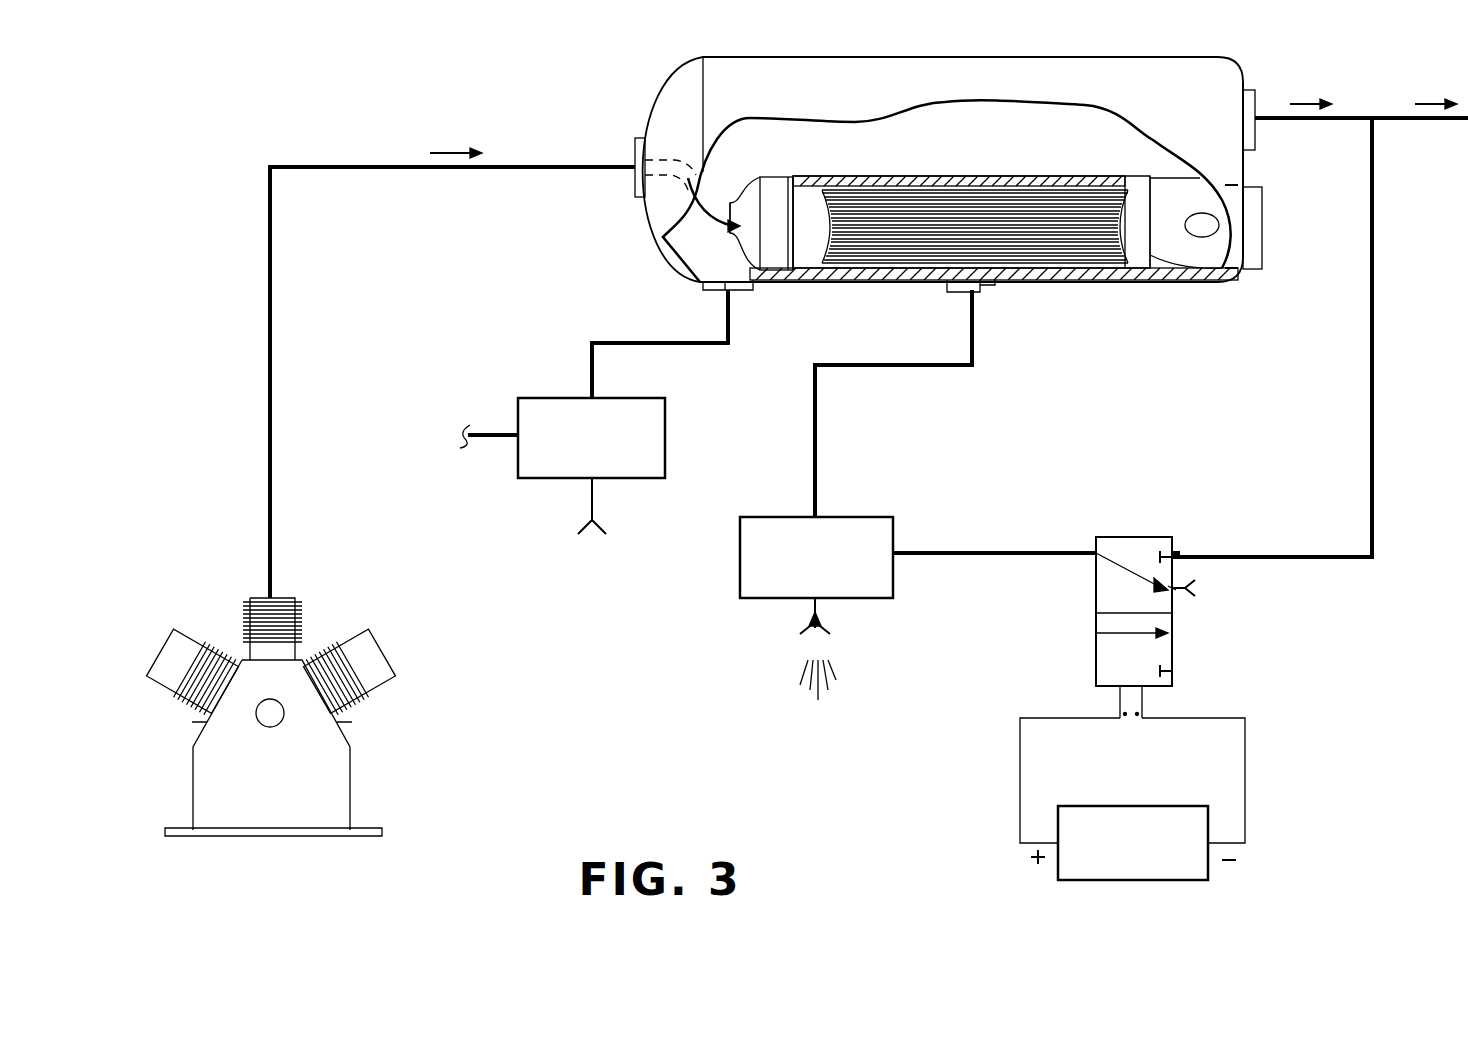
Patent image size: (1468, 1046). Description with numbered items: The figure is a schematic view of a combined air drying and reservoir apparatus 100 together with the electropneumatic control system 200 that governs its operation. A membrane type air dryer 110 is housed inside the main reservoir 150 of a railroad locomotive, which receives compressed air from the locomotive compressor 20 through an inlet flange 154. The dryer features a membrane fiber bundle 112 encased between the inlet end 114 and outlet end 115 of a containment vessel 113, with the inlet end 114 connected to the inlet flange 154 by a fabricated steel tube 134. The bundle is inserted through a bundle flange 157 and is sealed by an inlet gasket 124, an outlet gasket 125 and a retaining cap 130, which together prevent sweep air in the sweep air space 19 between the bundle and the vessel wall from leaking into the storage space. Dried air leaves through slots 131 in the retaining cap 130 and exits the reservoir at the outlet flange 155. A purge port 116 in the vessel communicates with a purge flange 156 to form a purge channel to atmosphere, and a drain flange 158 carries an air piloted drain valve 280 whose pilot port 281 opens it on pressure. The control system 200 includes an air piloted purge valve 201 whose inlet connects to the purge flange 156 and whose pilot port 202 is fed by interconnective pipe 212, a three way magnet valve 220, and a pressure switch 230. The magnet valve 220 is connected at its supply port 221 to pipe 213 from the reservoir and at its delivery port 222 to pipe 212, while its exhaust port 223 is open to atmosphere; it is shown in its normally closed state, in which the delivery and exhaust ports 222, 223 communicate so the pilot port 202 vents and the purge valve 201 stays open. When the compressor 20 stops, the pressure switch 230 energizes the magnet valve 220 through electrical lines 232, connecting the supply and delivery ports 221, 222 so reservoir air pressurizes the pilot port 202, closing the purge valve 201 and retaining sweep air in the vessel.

The locomotive compressor 20 is at (290, 789).
The combined air drying and reservoir apparatus 100 is at (593, 115).
The membrane type air dryer 110 is at (1087, 200).
The membrane fiber bundle 112 is at (1010, 200).
The containment vessel 113 is at (802, 177).
The inlet end 114 is at (732, 240).
The outlet end 115 is at (1158, 255).
The purge port 116 is at (955, 280).
The inlet gasket 124 is at (790, 276).
The outlet gasket 125 is at (1150, 190).
The retaining cap 130 is at (1200, 265).
The slots 131 is at (1200, 188).
The fabricated steel tube 134 is at (706, 196).
The main reservoir 150 is at (1243, 78).
The inlet flange 154 is at (635, 190).
The outlet flange 155 is at (1258, 138).
The purge flange 156 is at (990, 290).
The bundle flange 157 is at (1262, 190).
The drain flange 158 is at (712, 290).
The sweep air space 19 is at (955, 185).
The electropneumatic control system 200 is at (885, 732).
The purge valve 201 is at (872, 517).
The pilot port 202 is at (895, 553).
The interconnective pipe 212 is at (1002, 557).
The interconnective pipe 213 is at (1375, 232).
The magnet valve 220 is at (1133, 537).
The supply port 221 is at (1175, 553).
The delivery port 222 is at (1097, 553).
The exhaust port 223 is at (1175, 592).
The pressure switch 230 is at (1100, 883).
The electrical lines 232 is at (1020, 760).
The drain valve 280 is at (544, 398).
The pilot port 281 is at (488, 435).